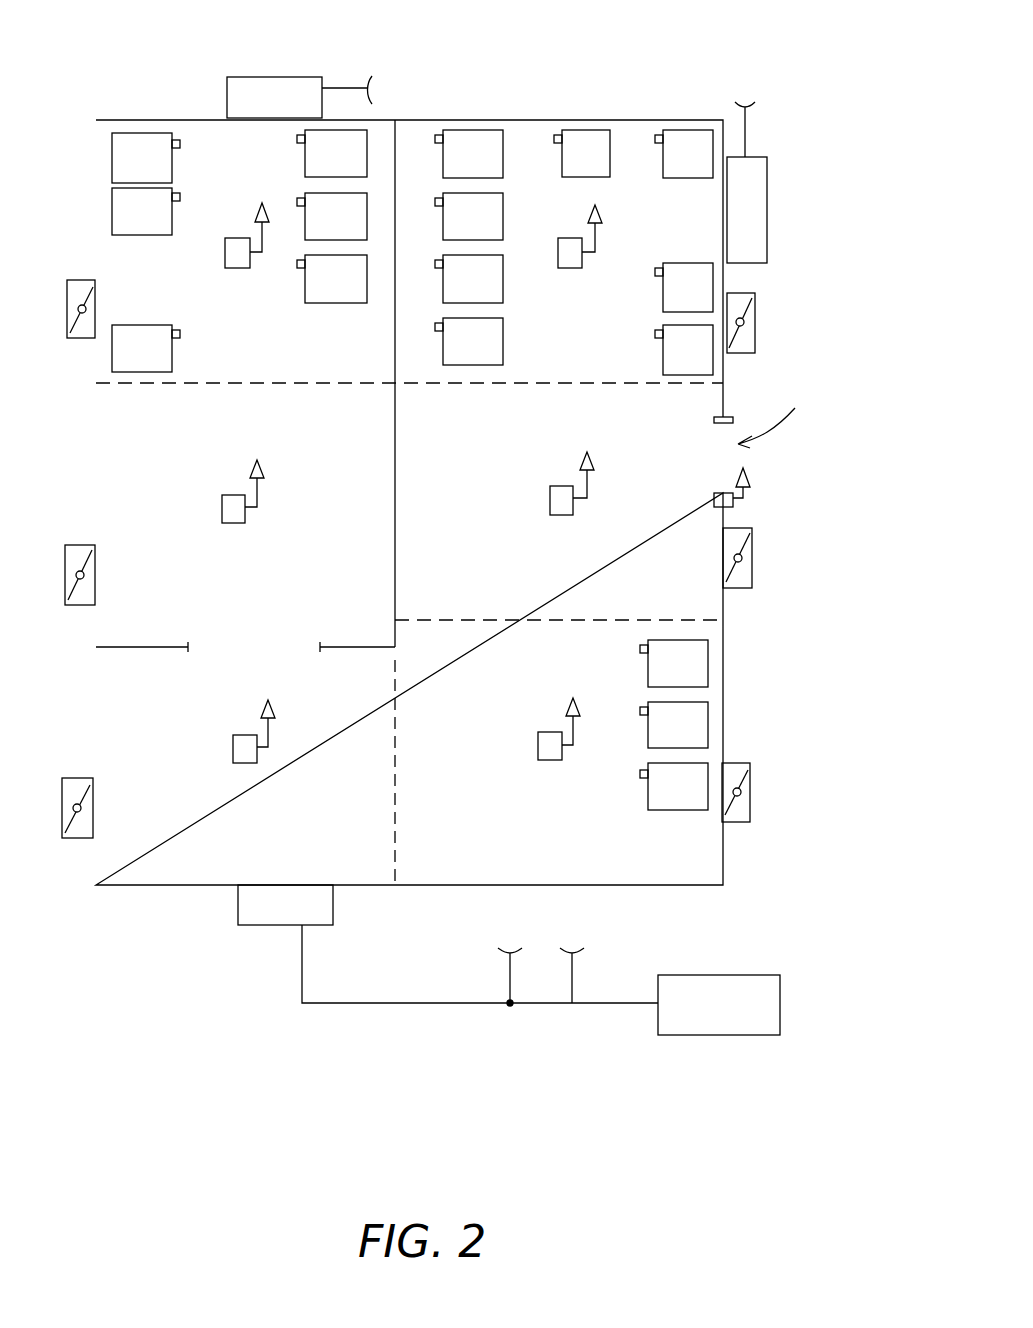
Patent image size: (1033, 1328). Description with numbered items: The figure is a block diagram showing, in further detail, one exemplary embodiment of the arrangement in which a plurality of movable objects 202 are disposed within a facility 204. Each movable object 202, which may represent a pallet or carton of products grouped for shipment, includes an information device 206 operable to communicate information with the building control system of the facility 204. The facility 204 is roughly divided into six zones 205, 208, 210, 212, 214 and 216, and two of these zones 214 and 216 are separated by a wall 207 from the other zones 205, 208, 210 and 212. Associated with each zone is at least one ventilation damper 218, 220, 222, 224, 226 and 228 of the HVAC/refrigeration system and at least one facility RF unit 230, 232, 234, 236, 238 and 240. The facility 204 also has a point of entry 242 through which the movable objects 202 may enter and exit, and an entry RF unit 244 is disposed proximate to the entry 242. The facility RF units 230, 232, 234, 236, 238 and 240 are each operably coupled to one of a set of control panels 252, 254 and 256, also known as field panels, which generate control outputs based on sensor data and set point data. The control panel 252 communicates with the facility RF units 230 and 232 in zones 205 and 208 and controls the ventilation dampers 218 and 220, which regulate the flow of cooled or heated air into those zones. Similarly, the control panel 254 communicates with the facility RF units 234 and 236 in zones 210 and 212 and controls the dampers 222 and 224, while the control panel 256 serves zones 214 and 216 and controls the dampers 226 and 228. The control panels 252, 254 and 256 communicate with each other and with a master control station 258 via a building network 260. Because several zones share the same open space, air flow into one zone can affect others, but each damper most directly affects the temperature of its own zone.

The movable object 202 is at (359, 169).
The facility 204 is at (595, 120).
The zone 205 is at (685, 236).
The information device 206 is at (297, 139).
The wall 207 is at (400, 455).
The zone 208 is at (500, 549).
The zone 210 is at (470, 694).
The zone 212 is at (358, 714).
The zone 214 is at (353, 532).
The zone 216 is at (368, 359).
The ventilation damper 218 is at (755, 310).
The ventilation damper 220 is at (752, 558).
The ventilation damper 222 is at (750, 782).
The ventilation damper 224 is at (68, 778).
The ventilation damper 226 is at (72, 545).
The ventilation damper 228 is at (75, 280).
The facility RF unit 230 is at (570, 268).
The facility RF unit 232 is at (560, 515).
The facility RF unit 234 is at (547, 760).
The facility RF unit 236 is at (243, 763).
The facility RF unit 238 is at (232, 523).
The facility RF unit 240 is at (225, 255).
The point of entry 242 is at (771, 414).
The entry RF unit 244 is at (733, 503).
The control panel 252 is at (767, 197).
The control panel 254 is at (258, 925).
The control panel 256 is at (227, 88).
The master control station 258 is at (750, 975).
The building network 260 is at (338, 88).